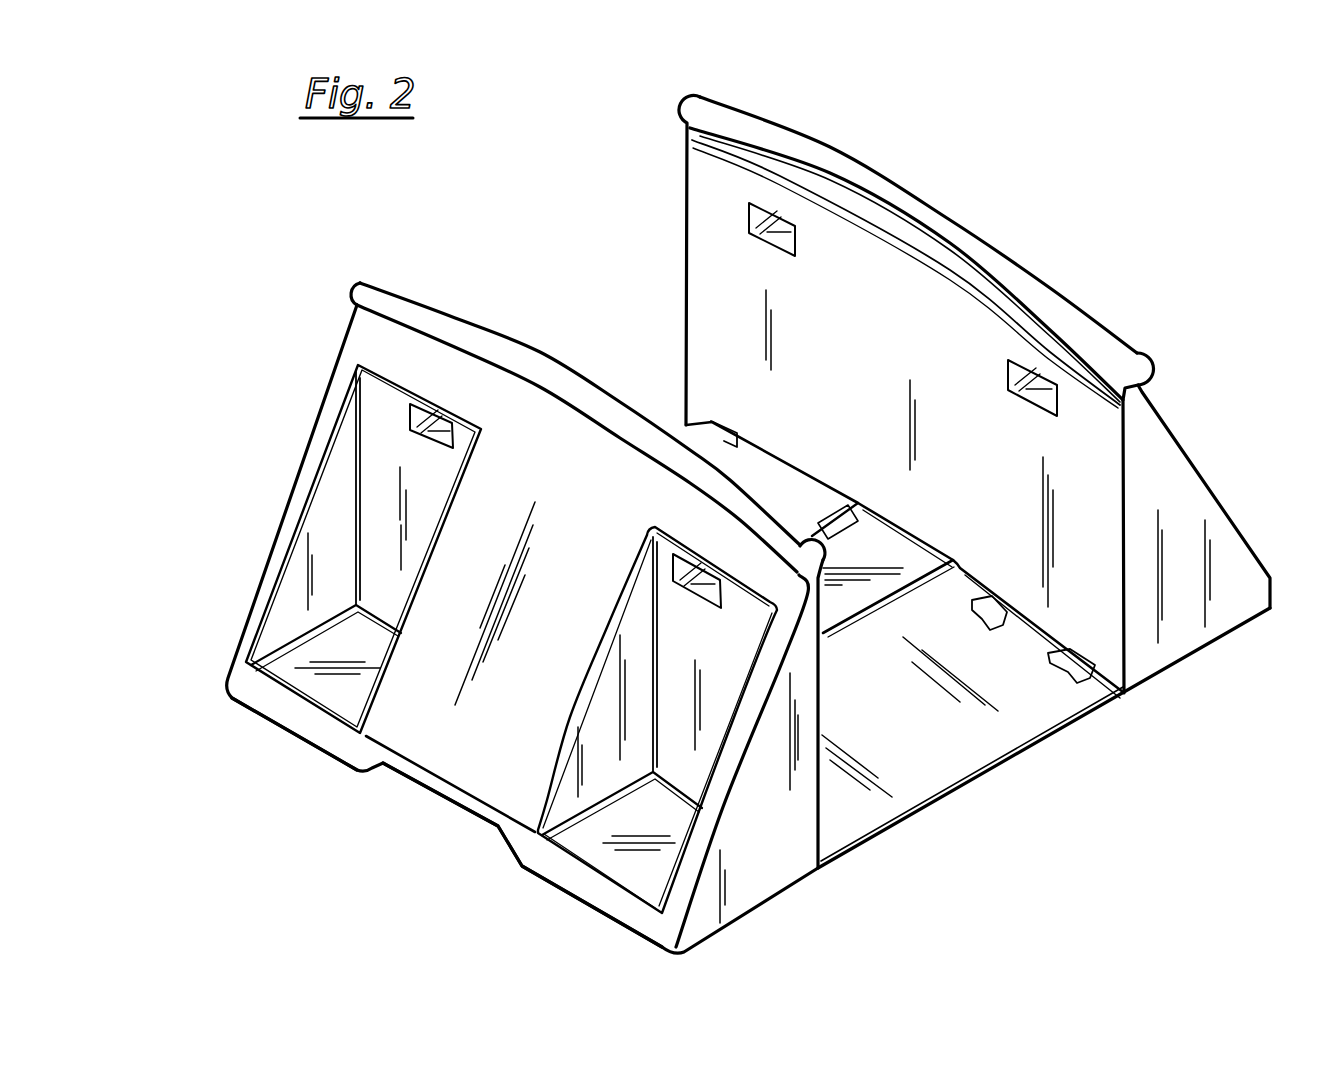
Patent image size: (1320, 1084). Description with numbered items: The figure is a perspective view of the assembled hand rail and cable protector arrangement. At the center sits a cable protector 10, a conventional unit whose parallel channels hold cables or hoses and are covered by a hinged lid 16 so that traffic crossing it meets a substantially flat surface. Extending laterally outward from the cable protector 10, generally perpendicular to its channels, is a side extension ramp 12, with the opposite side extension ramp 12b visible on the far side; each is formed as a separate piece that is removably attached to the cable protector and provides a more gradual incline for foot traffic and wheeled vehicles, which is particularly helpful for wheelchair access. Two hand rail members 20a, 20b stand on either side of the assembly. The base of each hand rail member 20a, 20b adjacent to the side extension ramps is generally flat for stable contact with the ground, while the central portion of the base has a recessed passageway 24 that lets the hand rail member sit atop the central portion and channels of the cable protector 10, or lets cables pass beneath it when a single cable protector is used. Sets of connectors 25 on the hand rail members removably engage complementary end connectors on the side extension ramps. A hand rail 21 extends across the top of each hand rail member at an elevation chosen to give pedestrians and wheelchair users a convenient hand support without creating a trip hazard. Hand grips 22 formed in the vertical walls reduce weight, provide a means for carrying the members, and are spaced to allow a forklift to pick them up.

The cable protector 10 is at (664, 405).
The side extension ramp 12 is at (780, 497).
The side extension ramp 12b is at (947, 760).
The hinged lid 16 is at (887, 559).
The hand rail member 20a is at (248, 455).
The hand rail member 20b is at (1148, 309).
The hand rail 21 is at (443, 313).
The hand grip 22 is at (672, 558).
The recessed passageway 24 is at (420, 793).
The connector 25 is at (1067, 663).